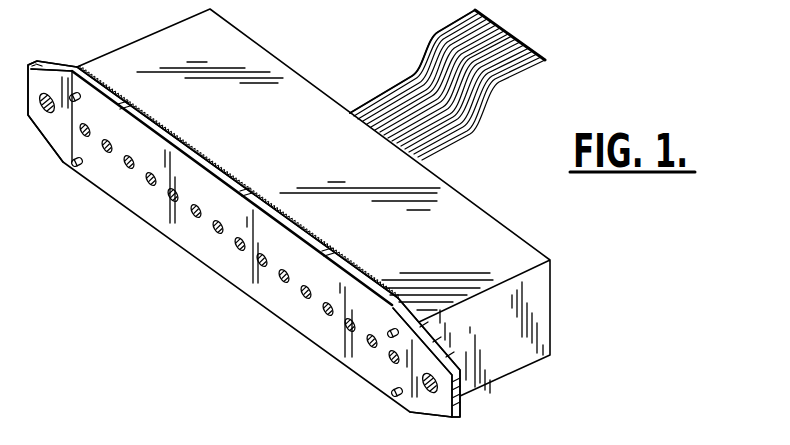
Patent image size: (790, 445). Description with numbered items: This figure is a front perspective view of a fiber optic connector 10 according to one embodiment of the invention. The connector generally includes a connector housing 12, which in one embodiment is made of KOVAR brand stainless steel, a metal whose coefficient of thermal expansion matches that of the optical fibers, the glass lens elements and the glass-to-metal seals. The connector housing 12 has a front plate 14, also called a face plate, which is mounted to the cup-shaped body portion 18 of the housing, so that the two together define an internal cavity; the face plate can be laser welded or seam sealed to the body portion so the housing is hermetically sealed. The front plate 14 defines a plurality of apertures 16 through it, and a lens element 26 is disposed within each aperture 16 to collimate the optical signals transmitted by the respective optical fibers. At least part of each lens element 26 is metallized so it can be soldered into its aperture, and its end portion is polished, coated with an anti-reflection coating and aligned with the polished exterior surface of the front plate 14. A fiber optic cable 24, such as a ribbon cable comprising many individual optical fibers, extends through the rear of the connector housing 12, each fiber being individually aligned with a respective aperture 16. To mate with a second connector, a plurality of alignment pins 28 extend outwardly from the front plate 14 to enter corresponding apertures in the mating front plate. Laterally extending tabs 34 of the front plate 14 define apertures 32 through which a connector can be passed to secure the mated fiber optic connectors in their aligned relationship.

The fiber optic connector 10 is at (600, 280).
The connector housing 12 is at (523, 253).
The front plate 14 is at (158, 88).
The apertures 16 is at (329, 316).
The cup-shaped body portion 18 is at (298, 90).
The fiber optic cable 24 is at (487, 112).
The lens elements 26 is at (218, 233).
The alignment pins 28 is at (78, 92).
The apertures 32 is at (47, 112).
The laterally extending tabs 34 is at (50, 63).